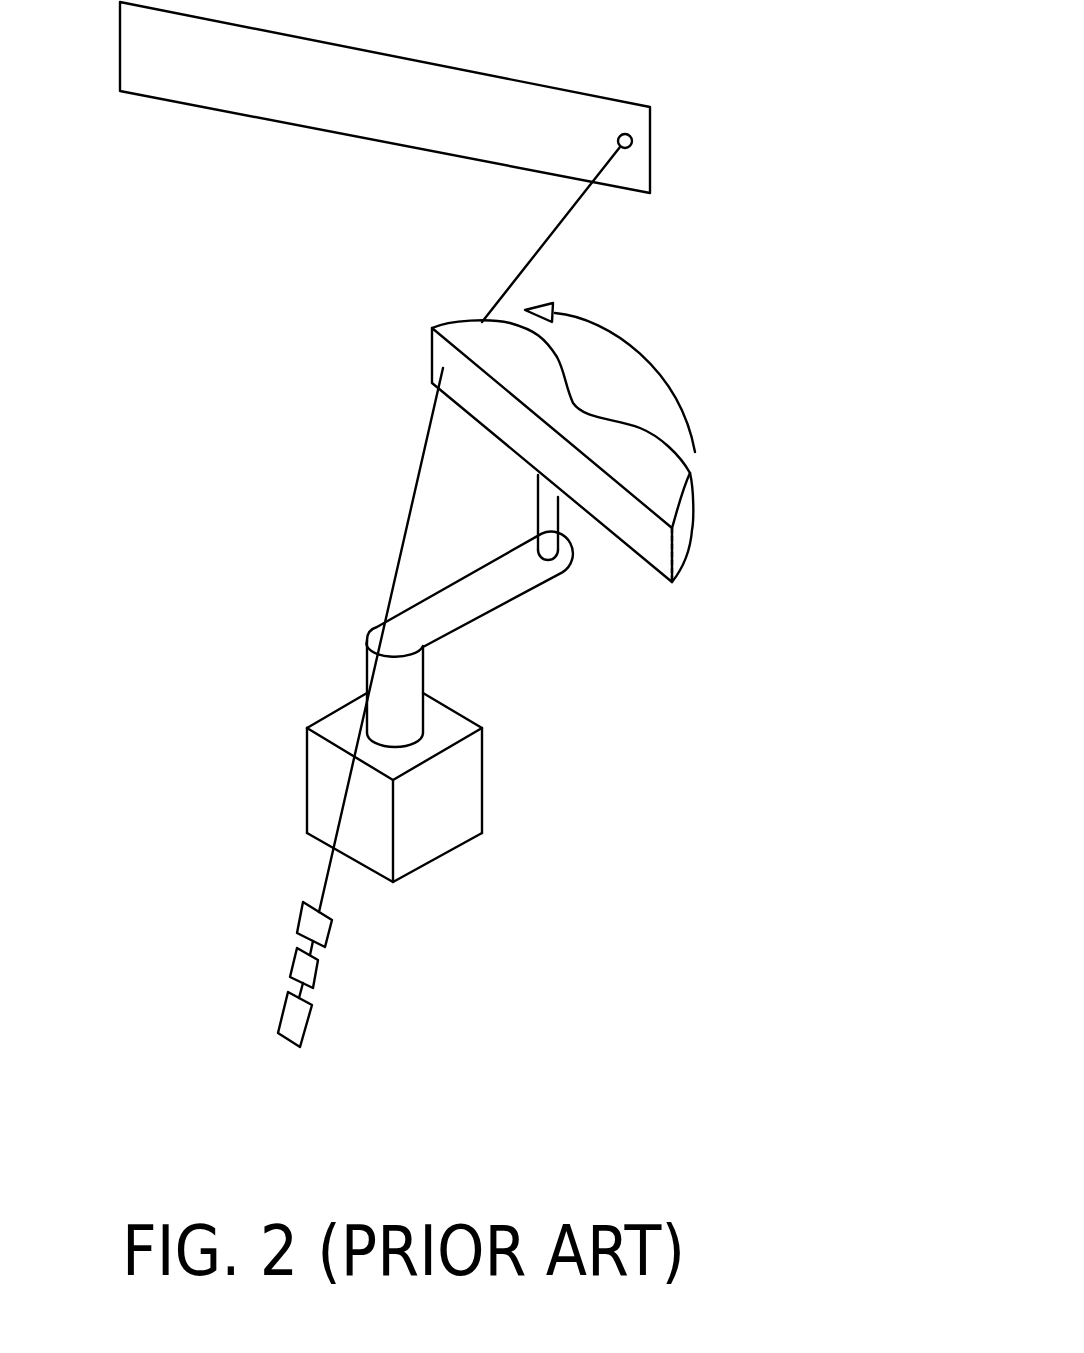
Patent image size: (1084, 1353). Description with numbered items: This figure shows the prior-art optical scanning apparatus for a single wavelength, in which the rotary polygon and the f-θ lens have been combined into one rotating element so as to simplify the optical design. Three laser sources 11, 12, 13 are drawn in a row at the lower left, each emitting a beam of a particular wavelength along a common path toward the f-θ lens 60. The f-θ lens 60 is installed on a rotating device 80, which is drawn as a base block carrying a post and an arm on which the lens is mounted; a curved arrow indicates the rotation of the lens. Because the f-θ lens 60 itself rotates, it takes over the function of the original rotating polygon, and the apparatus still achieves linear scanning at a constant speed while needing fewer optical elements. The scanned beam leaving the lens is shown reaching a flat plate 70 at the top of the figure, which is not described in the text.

The laser source 11 is at (297, 1023).
The laser source 12 is at (312, 968).
The laser source 13 is at (322, 923).
The f-θ lens 60 is at (663, 490).
The screen 70 is at (327, 100).
The rotating device 80 is at (318, 760).